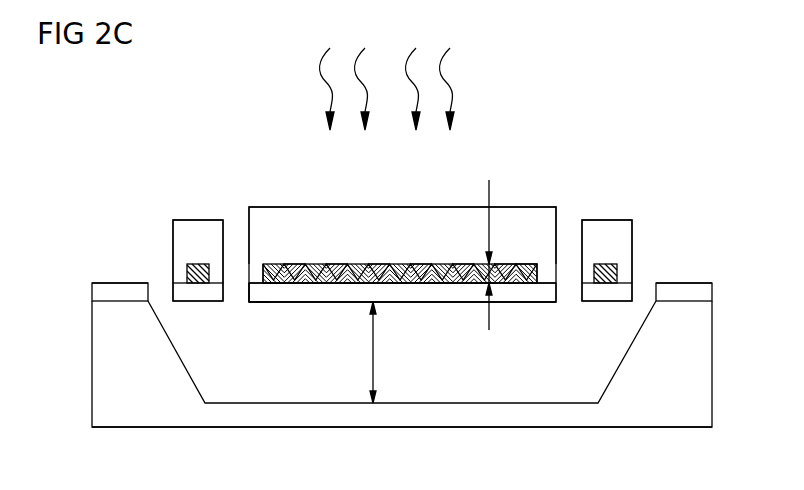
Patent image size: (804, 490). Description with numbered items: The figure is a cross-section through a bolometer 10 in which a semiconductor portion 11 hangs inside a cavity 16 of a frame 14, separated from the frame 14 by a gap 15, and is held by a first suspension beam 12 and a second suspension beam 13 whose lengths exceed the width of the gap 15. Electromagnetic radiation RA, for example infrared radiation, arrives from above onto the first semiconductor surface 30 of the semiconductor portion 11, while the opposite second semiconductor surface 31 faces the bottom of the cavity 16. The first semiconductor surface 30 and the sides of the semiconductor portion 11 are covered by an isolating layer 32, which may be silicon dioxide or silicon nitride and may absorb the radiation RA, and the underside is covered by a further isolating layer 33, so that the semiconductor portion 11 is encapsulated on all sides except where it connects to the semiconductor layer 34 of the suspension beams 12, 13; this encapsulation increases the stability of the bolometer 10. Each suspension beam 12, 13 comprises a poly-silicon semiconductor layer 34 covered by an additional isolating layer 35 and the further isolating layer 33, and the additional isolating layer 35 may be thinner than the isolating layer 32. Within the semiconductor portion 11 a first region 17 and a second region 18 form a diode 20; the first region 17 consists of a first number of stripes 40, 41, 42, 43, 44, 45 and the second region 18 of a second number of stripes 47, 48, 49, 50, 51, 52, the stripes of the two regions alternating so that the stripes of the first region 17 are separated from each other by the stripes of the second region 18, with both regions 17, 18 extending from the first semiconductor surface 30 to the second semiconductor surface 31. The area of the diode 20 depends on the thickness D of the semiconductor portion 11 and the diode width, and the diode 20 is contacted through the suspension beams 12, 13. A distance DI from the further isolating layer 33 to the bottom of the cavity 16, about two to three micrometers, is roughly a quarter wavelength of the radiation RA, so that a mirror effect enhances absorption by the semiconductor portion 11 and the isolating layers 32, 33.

The bolometer 10 is at (124, 135).
The semiconductor portion 11 is at (251, 300).
The first suspension beam 12 is at (197, 180).
The second suspension beam 13 is at (607, 180).
The frame 14 is at (100, 359).
The gap 15 is at (150, 282).
The cavity 16 is at (520, 385).
The first region 17 is at (264, 272).
The second region 18 is at (524, 268).
The diode 20 is at (390, 195).
The first semiconductor surface 30 is at (270, 268).
The second semiconductor surface 31 is at (298, 302).
The isolating layer 32 is at (450, 215).
The further isolating layer 33 is at (100, 292).
The semiconductor layer 34 is at (198, 268).
The additional isolating layer 35 is at (185, 238).
The stripe 40 is at (272, 290).
The stripe 41 is at (316, 284).
The stripe 42 is at (353, 284).
The stripe 43 is at (398, 284).
The stripe 44 is at (434, 284).
The stripe 45 is at (470, 284).
The stripe 47 is at (293, 266).
The stripe 48 is at (333, 266).
The stripe 49 is at (378, 266).
The stripe 50 is at (420, 266).
The stripe 51 is at (461, 266).
The stripe 52 is at (498, 266).
The thickness of the semiconductor portion D is at (493, 183).
The distance DI is at (377, 370).
The electromagnetic radiation RA is at (387, 89).